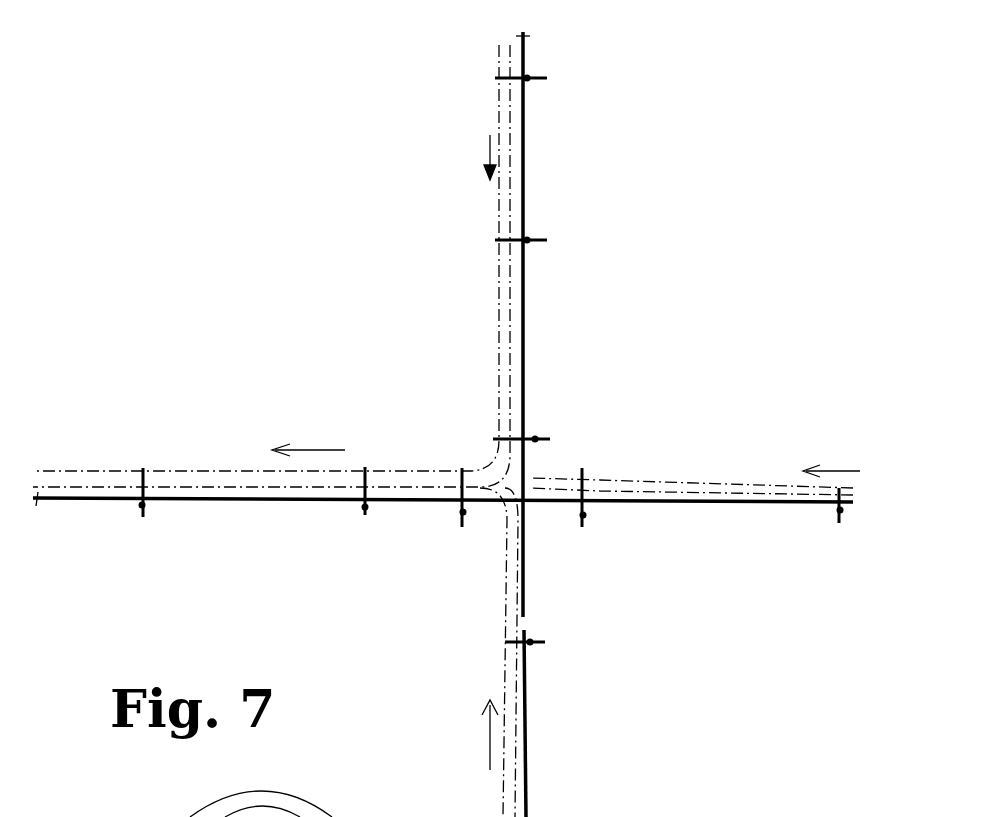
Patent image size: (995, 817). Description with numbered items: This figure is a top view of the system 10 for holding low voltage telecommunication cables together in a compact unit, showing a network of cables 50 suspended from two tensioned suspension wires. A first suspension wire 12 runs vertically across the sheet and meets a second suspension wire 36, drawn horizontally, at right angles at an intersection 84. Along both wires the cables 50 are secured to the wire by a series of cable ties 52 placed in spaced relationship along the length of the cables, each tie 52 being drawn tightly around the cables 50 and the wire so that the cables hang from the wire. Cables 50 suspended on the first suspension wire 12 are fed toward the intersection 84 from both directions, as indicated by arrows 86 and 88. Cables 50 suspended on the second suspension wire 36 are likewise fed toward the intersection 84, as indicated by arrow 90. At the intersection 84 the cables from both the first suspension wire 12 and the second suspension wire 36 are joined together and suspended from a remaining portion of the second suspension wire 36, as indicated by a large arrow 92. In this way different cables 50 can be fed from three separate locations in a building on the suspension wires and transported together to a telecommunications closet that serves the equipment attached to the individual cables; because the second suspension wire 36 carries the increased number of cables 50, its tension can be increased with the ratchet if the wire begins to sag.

The system 10 is at (630, 360).
The first suspension wire 12 is at (525, 165).
The second suspension wire 36 is at (93, 545).
The telecommunication cables 50 is at (500, 385).
The cable tie 52 is at (530, 78).
The intersection 84 is at (530, 503).
The arrow 86 is at (490, 155).
The arrow 88 is at (490, 737).
The arrow 90 is at (838, 468).
The large arrow 92 is at (318, 448).